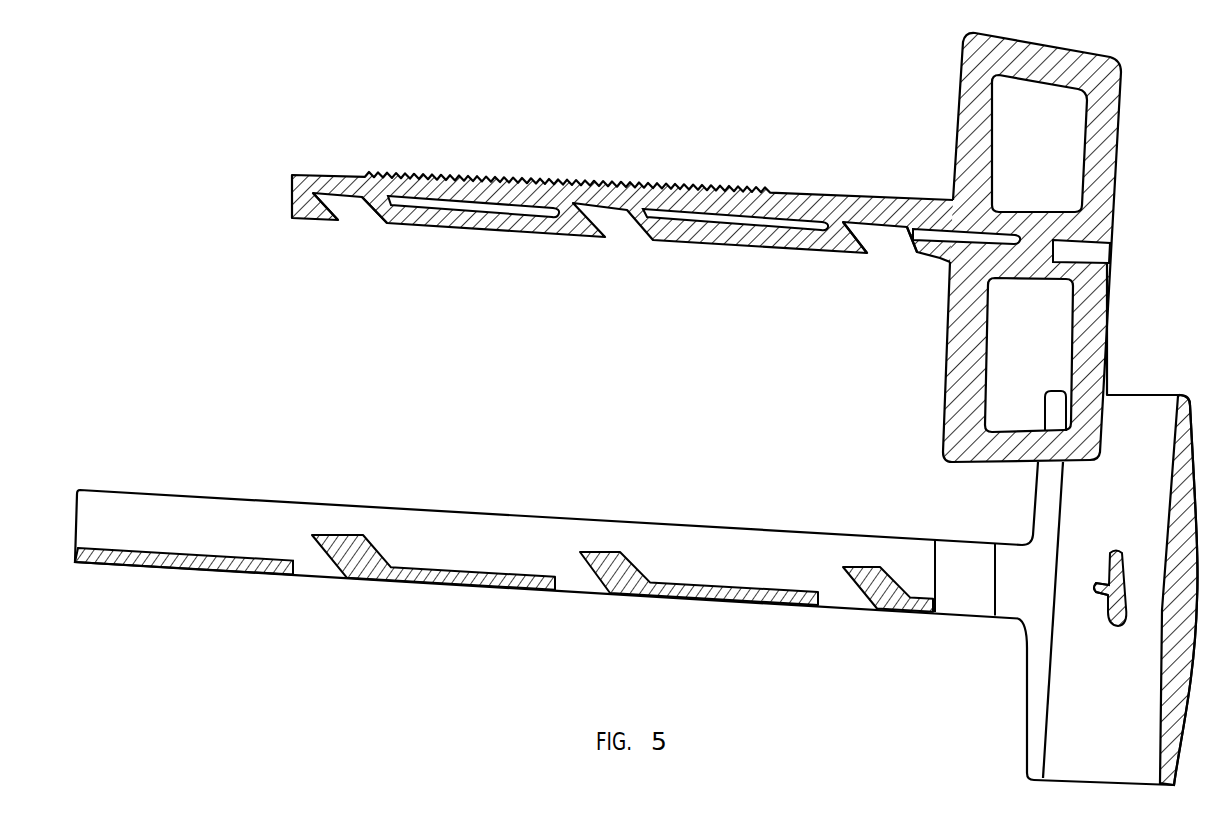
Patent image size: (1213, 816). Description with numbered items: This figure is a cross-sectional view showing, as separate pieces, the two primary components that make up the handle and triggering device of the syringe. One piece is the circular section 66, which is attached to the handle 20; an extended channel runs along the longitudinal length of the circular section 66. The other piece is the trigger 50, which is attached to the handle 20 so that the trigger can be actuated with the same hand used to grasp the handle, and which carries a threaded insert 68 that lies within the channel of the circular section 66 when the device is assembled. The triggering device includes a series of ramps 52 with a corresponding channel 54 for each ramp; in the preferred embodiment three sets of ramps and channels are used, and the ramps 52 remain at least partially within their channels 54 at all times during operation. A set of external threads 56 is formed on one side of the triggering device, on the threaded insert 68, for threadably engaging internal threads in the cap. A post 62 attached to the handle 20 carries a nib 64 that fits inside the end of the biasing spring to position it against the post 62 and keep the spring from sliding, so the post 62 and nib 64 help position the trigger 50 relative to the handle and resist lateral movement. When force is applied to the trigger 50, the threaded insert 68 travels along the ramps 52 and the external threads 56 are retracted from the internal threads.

The handle 20 is at (1128, 757).
The trigger 50 is at (1110, 147).
The ramps 52 is at (352, 535).
The channel 54 is at (343, 207).
The external threads 56 is at (512, 176).
The post 62 is at (1127, 610).
The nib 64 is at (1100, 585).
The circular section 66 is at (547, 552).
The threaded insert 68 is at (560, 228).